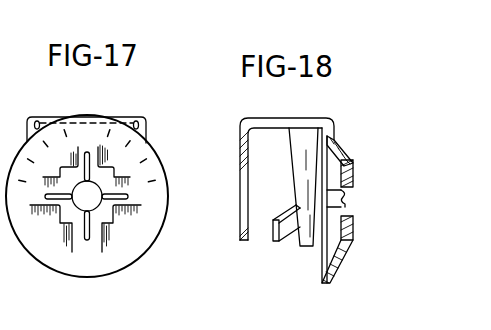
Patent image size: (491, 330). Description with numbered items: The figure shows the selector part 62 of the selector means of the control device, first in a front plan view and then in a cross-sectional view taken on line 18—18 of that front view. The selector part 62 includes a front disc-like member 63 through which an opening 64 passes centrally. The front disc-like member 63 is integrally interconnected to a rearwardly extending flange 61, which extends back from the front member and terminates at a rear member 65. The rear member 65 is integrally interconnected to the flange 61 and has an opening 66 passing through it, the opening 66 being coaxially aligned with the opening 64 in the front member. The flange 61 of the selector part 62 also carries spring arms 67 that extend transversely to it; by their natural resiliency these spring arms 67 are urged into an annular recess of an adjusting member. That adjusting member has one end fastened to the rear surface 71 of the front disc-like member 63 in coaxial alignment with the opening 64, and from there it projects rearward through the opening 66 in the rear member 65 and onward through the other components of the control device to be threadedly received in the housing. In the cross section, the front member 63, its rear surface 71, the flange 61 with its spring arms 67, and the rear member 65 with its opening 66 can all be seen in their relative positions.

In FIG. 17, the section line 18— 18 is at (87, 136).
In FIG. 18, the rearwardly extending flange 61 is at (264, 124).
In FIG. 17, the selector part 62 is at (174, 170).
In FIG. 18, the selector part 62 is at (356, 124).
In FIG. 17, the front disc-like member 63 is at (140, 247).
In FIG. 18, the front disc-like member 63 is at (335, 267).
In FIG. 17, the opening 64 is at (83, 199).
In FIG. 18, the opening 64 is at (345, 190).
In FIG. 18, the rear member 65 is at (240, 233).
In FIG. 18, the opening 66 is at (243, 197).
In FIG. 18, the spring arms 67 is at (303, 246).
In FIG. 18, the rear surface 71 is at (335, 230).